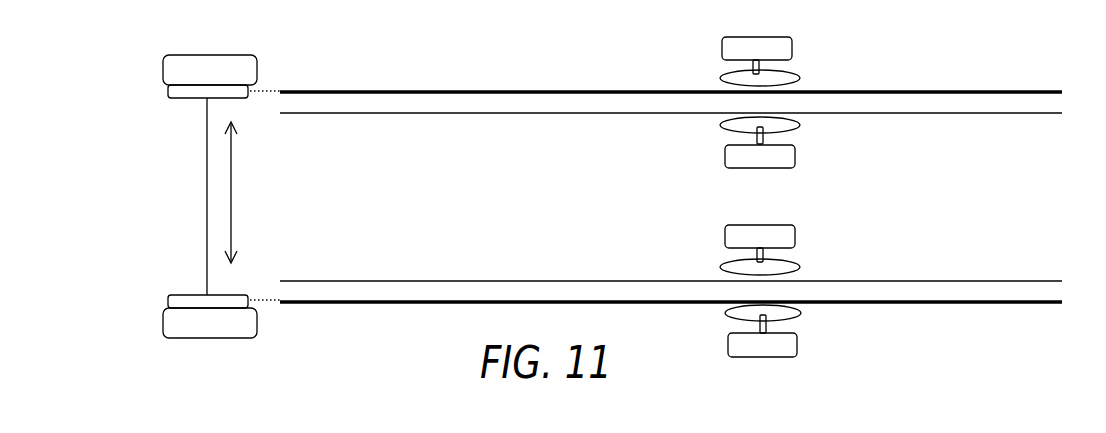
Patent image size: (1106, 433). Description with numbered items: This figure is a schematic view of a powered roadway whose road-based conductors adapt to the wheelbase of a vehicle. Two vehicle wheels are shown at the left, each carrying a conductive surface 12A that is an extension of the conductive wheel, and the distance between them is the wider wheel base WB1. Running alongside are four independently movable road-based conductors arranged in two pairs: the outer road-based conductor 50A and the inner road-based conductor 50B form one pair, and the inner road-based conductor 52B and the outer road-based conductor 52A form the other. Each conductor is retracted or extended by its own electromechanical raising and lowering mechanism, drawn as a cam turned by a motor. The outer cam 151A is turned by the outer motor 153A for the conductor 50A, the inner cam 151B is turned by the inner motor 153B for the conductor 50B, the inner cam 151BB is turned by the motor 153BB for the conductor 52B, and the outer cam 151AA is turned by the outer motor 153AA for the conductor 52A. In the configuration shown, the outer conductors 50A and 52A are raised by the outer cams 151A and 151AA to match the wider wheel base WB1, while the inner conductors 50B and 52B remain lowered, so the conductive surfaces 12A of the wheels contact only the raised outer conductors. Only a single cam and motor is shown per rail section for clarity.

The conductive surface 12A is at (165, 90).
The wider wheel base WB1 is at (272, 192).
The outer road-based conductor 50A is at (1010, 92).
The inner road-based conductor 50B is at (997, 114).
The outer road-based conductor 52A is at (1013, 303).
The inner road-based conductor 52B is at (1035, 281).
The outer motor 153A is at (792, 46).
The outer cam 151A is at (798, 78).
The inner cam 151B is at (800, 128).
The inner motor 153B is at (795, 152).
The inner motor 153BB is at (795, 233).
The inner cam 151BB is at (800, 265).
The outer cam 151AA is at (801, 315).
The outer motor 153AA is at (797, 345).